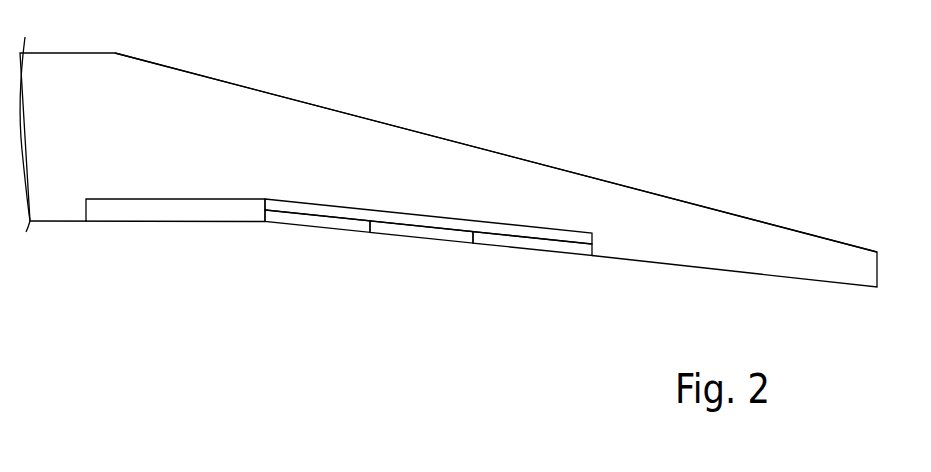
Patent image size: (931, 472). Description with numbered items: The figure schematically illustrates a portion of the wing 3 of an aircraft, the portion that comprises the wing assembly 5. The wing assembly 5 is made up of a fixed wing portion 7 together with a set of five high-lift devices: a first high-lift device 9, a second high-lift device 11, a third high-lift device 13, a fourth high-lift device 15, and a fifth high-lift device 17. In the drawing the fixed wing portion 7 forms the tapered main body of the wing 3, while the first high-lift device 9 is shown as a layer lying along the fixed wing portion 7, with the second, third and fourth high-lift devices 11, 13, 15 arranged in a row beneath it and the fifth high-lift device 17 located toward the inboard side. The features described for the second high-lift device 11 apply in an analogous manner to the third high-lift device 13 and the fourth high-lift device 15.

The wing 3 is at (293, 97).
The wing assembly 5 is at (391, 328).
The fixed wing portion 7 is at (648, 208).
The first high-lift device 9 is at (400, 218).
The second high-lift device 11 is at (300, 222).
The third high-lift device 13 is at (428, 237).
The fourth high-lift device 15 is at (540, 243).
The fifth high-lift device 17 is at (162, 211).